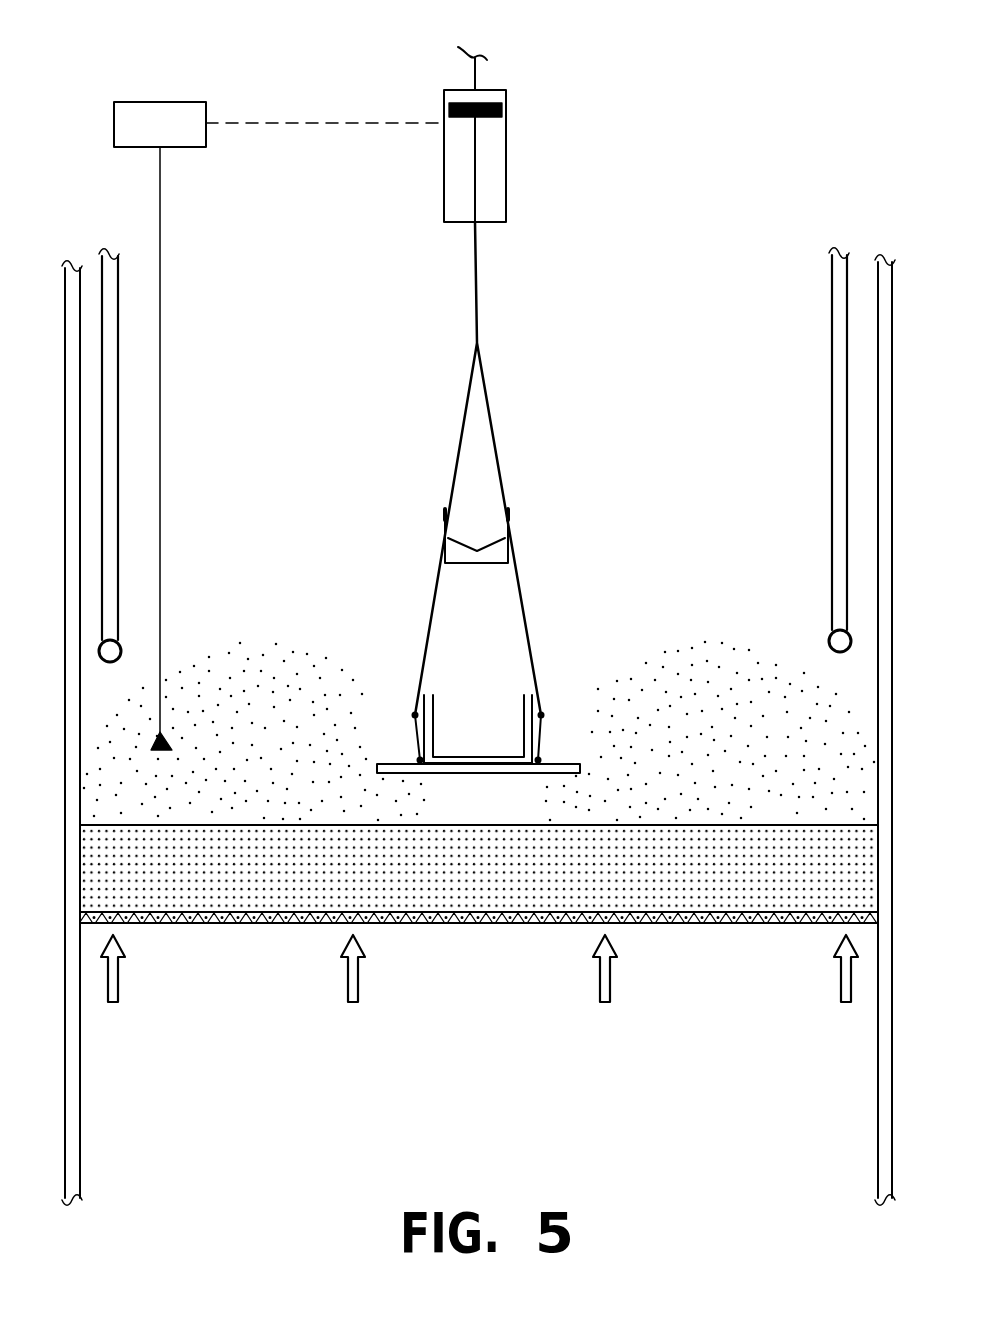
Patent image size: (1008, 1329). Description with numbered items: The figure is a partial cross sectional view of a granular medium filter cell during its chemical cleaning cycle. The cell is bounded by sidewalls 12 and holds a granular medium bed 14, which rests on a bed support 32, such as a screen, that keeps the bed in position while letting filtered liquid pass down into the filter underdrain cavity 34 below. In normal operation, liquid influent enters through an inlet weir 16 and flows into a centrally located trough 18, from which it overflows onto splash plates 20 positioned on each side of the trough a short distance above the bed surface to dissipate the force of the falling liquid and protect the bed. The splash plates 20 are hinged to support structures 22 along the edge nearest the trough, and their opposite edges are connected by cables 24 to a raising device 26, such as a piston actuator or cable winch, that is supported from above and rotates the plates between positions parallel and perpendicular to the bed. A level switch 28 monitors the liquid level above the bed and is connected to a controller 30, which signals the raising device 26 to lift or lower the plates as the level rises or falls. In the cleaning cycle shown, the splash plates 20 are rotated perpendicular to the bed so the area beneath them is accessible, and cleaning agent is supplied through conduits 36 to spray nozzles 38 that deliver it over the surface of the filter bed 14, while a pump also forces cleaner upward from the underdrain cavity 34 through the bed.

The sidewalls 12 is at (73, 336).
The granular medium bed 14 is at (197, 892).
The inlet weir 16 is at (510, 518).
The trough 18 is at (530, 707).
The splash plates 20 is at (418, 748).
The support structures 22 is at (400, 771).
The cables 24 is at (463, 393).
The raising device 26 is at (506, 143).
The level switch 28 is at (160, 734).
The controller 30 is at (148, 107).
The bed support 32 is at (263, 923).
The filter underdrain cavity 34 is at (493, 1006).
The conduits 36 is at (110, 550).
The spray nozzles 38 is at (116, 651).